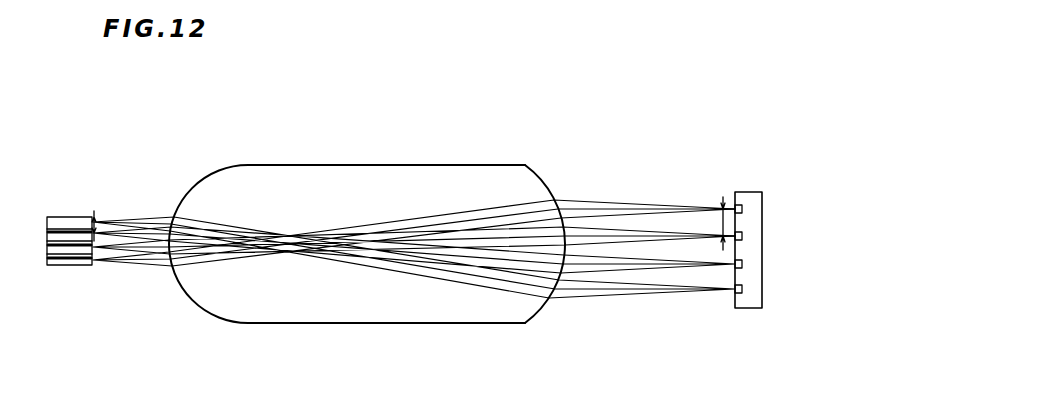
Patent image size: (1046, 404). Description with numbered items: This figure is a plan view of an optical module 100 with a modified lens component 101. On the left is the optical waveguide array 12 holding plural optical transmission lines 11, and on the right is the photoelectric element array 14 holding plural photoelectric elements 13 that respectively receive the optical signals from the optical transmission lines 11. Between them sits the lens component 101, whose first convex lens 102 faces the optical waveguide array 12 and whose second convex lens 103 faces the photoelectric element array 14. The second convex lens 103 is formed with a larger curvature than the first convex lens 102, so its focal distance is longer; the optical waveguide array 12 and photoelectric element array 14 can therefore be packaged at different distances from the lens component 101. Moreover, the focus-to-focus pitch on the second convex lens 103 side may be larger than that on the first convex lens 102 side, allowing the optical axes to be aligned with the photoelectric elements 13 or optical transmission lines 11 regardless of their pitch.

The optical transmission line 11 is at (47, 259).
The optical waveguide array 12 is at (67, 209).
The photoelectric element 13 is at (739, 294).
The photoelectric element array 14 is at (746, 181).
The optical module 100 is at (724, 139).
The lens component 101 is at (514, 159).
The first convex lens 102 is at (198, 203).
The second convex lens 103 is at (537, 191).